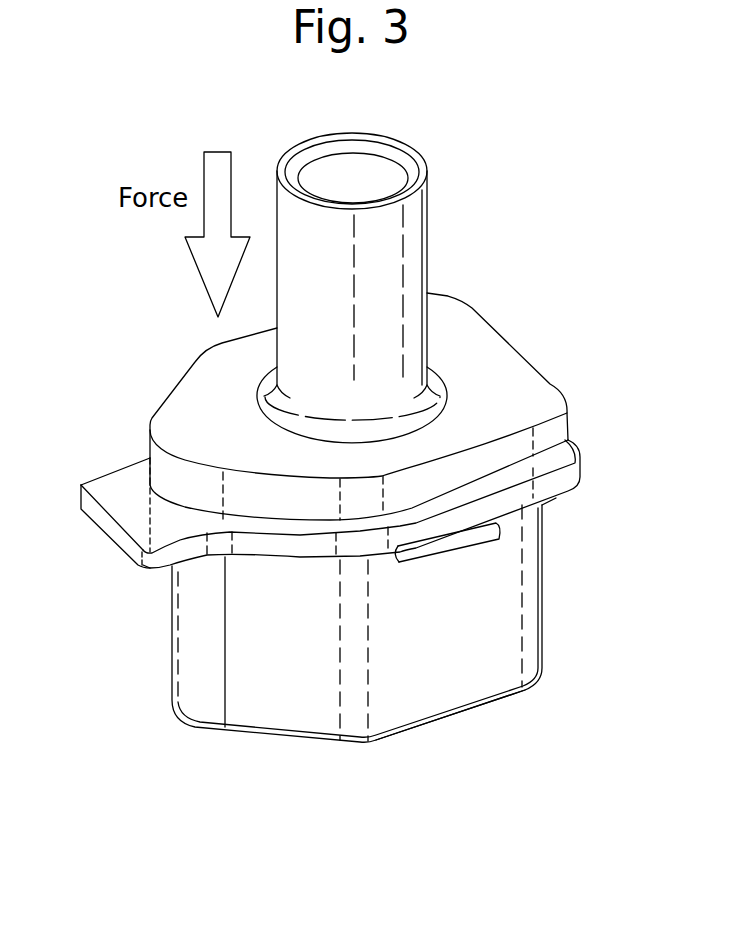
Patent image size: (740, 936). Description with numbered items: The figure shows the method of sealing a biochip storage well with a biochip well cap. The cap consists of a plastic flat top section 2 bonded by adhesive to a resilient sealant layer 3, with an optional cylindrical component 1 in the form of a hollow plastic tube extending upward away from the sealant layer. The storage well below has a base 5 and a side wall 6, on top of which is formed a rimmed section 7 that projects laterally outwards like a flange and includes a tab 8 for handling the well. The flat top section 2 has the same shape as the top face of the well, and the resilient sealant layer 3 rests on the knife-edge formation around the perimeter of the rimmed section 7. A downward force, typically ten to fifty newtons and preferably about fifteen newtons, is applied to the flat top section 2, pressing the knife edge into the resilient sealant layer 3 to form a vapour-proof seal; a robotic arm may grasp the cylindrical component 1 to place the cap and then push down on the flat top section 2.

The cylindrical component 1 is at (410, 235).
The flat top section 2 is at (500, 365).
The resilient sealant layer 3 is at (518, 480).
The base 5 is at (462, 713).
The side wall 6 is at (502, 603).
The rimmed section 7 is at (172, 520).
The tab 8 is at (113, 498).